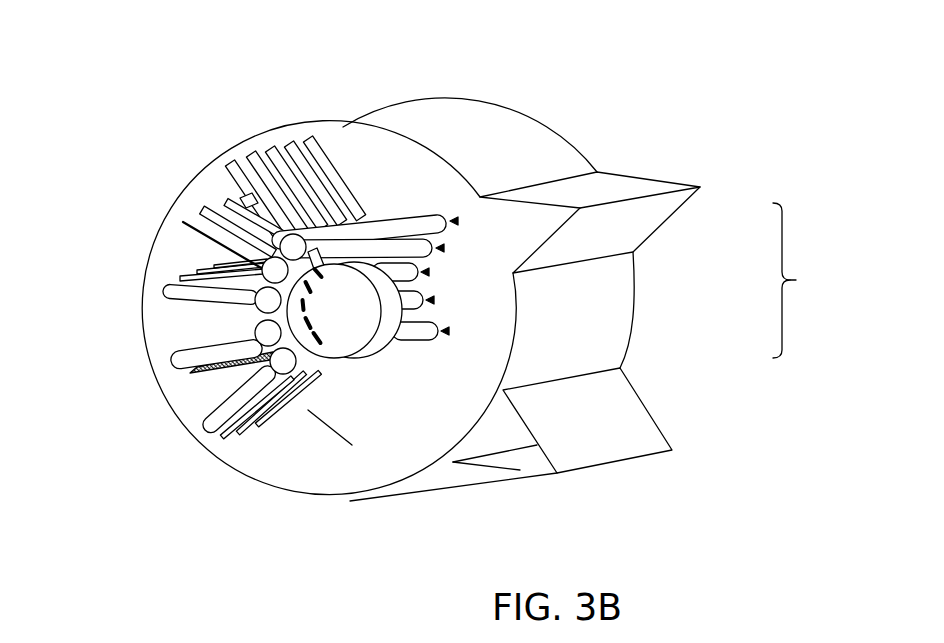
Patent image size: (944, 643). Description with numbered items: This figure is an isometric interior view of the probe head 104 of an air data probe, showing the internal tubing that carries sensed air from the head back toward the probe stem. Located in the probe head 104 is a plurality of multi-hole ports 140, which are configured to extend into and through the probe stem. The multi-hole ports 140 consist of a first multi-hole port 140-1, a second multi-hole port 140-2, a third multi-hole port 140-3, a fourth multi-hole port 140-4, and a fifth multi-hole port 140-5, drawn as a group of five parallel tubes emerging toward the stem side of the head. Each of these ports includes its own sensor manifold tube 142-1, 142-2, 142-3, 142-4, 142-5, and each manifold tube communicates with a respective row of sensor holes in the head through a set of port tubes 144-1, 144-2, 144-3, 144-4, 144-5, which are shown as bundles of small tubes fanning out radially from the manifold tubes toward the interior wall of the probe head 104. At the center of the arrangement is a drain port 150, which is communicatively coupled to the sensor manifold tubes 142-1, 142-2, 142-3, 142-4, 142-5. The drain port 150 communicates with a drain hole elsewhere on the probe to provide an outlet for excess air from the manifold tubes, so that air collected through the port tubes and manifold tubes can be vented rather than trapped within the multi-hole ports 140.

The probe head 104 is at (490, 85).
The multi-hole ports 140 is at (810, 280).
The first multi-hole port 140-1 is at (457, 221).
The second multi-hole port 140-2 is at (443, 248).
The third multi-hole port 140-3 is at (428, 273).
The fourth multi-hole port 140-4 is at (433, 301).
The fifth multi-hole port 140-5 is at (448, 331).
The sensor manifold tube 142-1 is at (417, 225).
The sensor manifold tube 142-2 is at (183, 222).
The sensor manifold tube 142-3 is at (262, 311).
The sensor manifold tube 142-4 is at (400, 307).
The sensor manifold tube 142-5 is at (420, 347).
The port tubes 144-1 is at (313, 205).
The port tubes 144-2 is at (226, 203).
The port tubes 144-3 is at (262, 272).
The port tubes 144-4 is at (190, 373).
The port tubes 144-5 is at (245, 434).
The drain port 150 is at (340, 350).